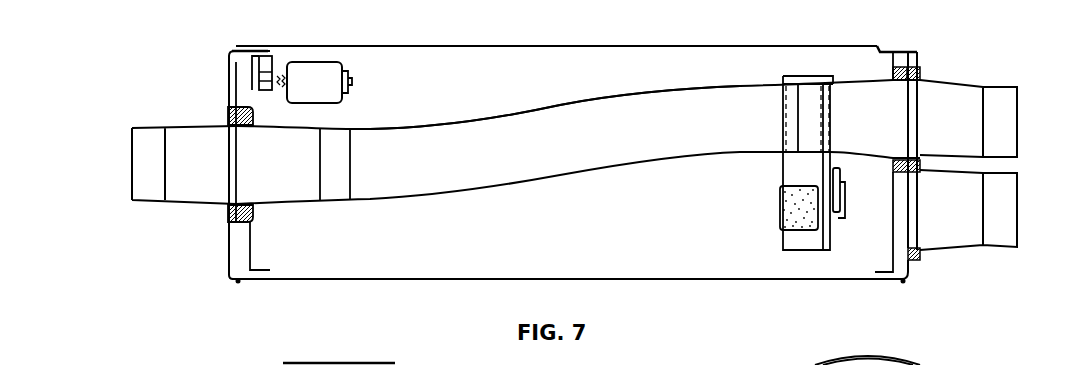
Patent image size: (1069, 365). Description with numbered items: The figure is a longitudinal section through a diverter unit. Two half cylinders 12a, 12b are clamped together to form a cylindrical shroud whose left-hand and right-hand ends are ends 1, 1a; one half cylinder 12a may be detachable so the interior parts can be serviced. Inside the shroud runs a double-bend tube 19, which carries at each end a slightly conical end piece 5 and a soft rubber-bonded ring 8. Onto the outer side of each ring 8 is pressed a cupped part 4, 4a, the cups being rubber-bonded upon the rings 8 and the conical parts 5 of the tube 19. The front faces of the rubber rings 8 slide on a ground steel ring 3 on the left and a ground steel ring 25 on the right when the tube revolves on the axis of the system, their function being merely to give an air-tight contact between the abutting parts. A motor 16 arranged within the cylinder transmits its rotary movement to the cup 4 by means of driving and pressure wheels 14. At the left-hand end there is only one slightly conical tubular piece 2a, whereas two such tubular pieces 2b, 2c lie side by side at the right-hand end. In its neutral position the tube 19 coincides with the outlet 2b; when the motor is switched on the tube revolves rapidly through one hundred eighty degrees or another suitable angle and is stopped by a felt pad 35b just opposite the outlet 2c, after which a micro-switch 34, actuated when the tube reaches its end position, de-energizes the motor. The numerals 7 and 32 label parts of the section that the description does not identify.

The end 1 is at (228, 73).
The end 1a is at (897, 50).
The tubular piece 2a is at (147, 142).
The tubular piece 2b is at (1007, 93).
The tubular piece 2c is at (995, 237).
The ground steel ring 3 is at (232, 113).
The cupped part 4 is at (250, 73).
The cupped part 4a is at (877, 49).
The conical end piece 5 is at (858, 95).
The inner support 7 is at (247, 220).
The rubber-bonded ring 8 is at (237, 223).
The half cylinder 12a is at (613, 47).
The half cylinder 12b is at (497, 282).
The driving and pressure wheels 14 is at (273, 80).
The motor 16 is at (320, 70).
The double-bend tube 19 is at (443, 135).
The ground steel ring 25 is at (918, 70).
The clamp block 32 is at (810, 240).
The micro-switch 34 is at (838, 220).
The felt pad 35b is at (785, 223).